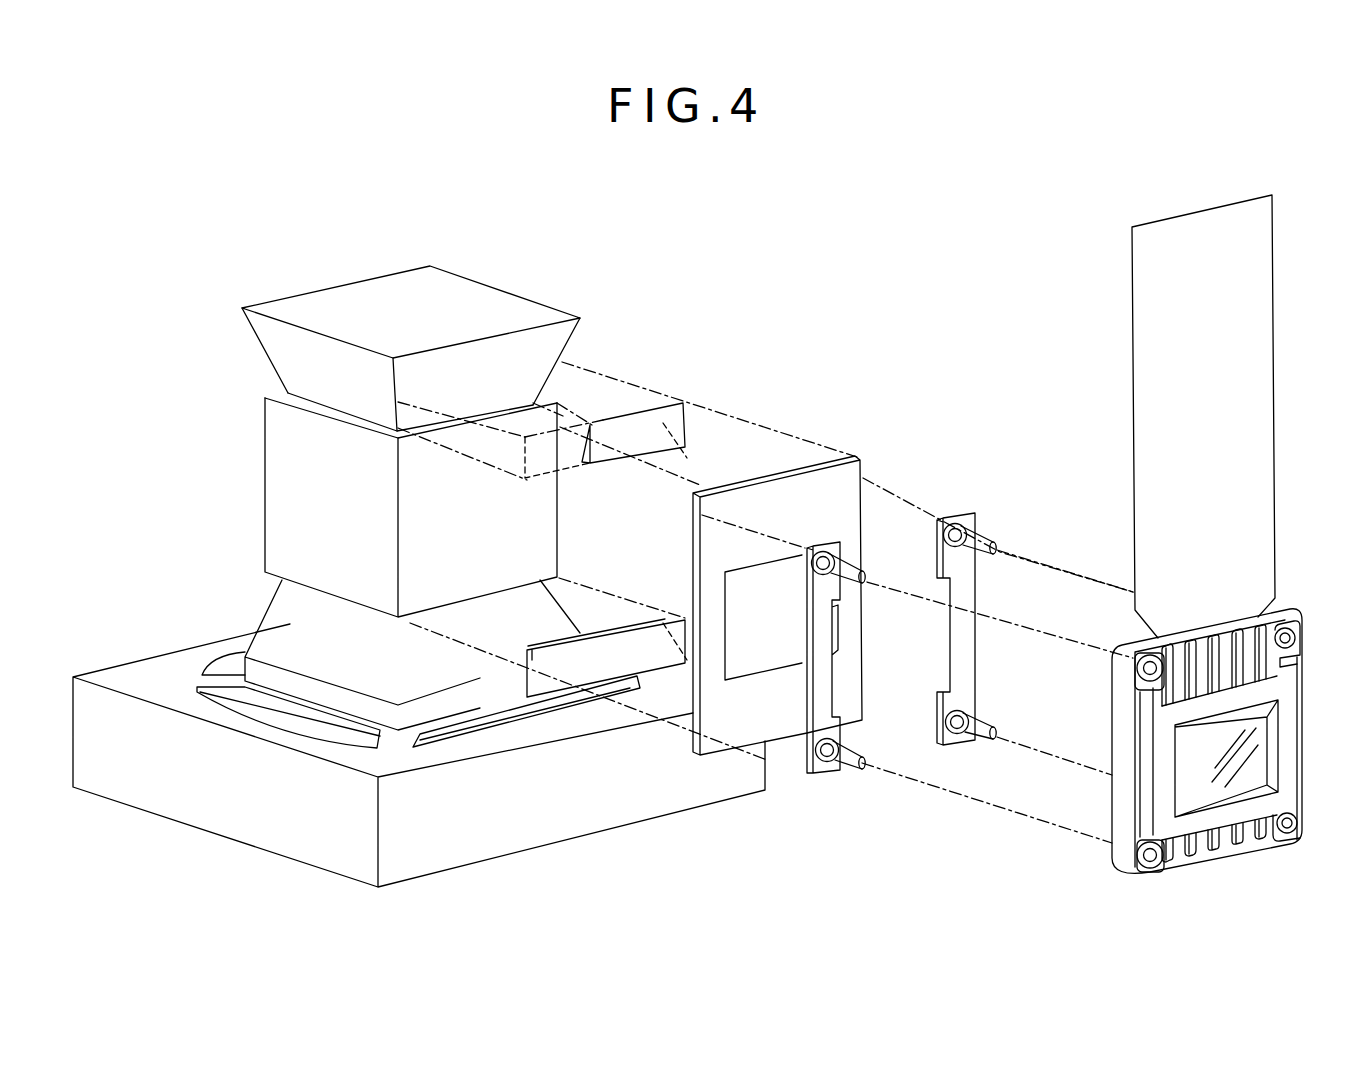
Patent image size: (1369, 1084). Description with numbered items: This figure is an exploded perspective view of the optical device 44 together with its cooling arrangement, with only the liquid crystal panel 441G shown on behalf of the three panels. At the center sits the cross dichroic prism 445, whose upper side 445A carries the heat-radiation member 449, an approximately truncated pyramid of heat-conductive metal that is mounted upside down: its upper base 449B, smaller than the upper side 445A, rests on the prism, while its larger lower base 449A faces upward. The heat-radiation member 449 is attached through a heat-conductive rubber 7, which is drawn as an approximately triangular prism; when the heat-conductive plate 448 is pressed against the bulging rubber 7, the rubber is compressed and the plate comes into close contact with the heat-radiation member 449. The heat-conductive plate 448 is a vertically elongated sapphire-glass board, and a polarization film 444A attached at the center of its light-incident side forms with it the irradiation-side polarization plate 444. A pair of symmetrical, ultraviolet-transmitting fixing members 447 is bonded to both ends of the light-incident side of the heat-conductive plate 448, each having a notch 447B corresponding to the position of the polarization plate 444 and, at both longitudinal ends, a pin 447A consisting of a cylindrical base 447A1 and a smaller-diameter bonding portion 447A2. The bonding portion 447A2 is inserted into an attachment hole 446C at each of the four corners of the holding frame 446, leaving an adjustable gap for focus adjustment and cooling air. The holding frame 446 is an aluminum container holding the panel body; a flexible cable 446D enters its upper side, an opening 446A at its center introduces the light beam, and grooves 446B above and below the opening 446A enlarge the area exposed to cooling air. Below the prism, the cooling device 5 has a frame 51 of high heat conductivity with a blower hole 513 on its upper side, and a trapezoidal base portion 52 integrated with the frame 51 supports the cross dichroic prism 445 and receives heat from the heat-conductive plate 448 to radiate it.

The optical device 44 is at (897, 286).
The heat-radiation member 449 is at (371, 318).
The lower base 449A is at (352, 297).
The upper base 449B is at (310, 406).
The cross dichroic prism 445 is at (367, 507).
The upper side 445A is at (342, 419).
The heat-conductive rubber 7 is at (624, 648).
The irradiation-side polarization plate 444 is at (777, 616).
The polarization film 444A is at (762, 652).
The heat-conductive plate 448 is at (852, 620).
The fixing member 447 is at (944, 675).
The notch 447B is at (832, 690).
The pin 447A is at (990, 722).
The base 447A1 is at (942, 660).
The bonding portion 447A2 is at (977, 743).
The holding frame 446 is at (1240, 561).
The opening 446A is at (1273, 720).
The groove 446B is at (1223, 640).
The attachment hole 446C is at (1296, 640).
The flexible cable 446D is at (1252, 323).
The liquid crystal panel 441G is at (1296, 516).
The cooling device 5 is at (419, 740).
The frame 51 is at (419, 764).
The base portion 52 is at (273, 633).
The blower hole 513 is at (492, 727).